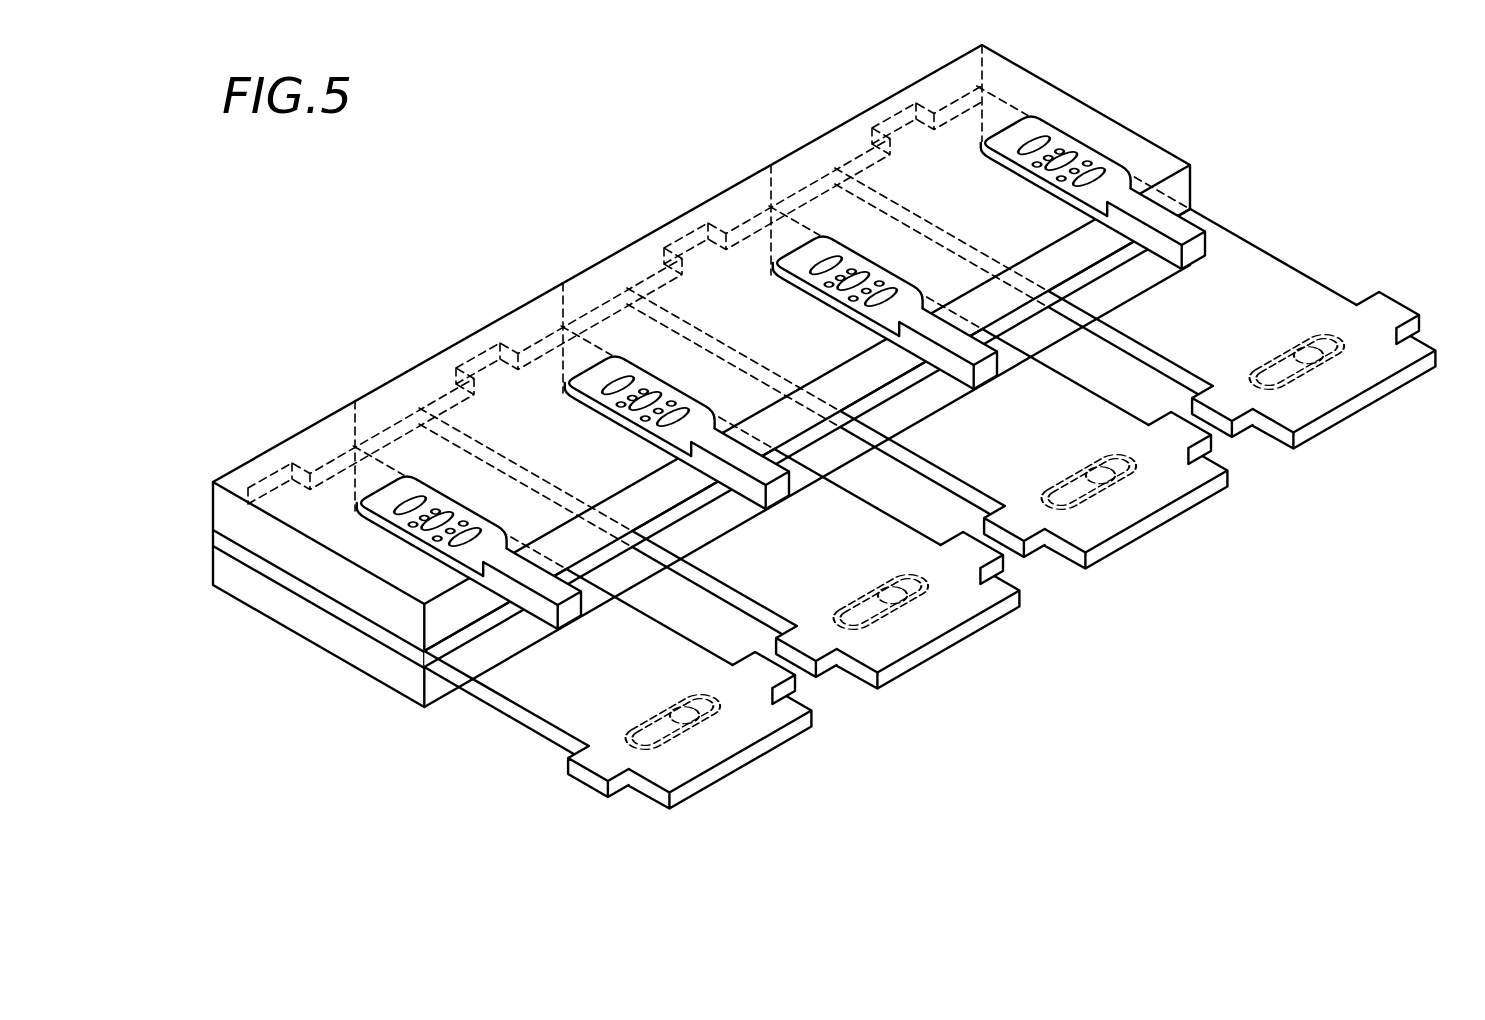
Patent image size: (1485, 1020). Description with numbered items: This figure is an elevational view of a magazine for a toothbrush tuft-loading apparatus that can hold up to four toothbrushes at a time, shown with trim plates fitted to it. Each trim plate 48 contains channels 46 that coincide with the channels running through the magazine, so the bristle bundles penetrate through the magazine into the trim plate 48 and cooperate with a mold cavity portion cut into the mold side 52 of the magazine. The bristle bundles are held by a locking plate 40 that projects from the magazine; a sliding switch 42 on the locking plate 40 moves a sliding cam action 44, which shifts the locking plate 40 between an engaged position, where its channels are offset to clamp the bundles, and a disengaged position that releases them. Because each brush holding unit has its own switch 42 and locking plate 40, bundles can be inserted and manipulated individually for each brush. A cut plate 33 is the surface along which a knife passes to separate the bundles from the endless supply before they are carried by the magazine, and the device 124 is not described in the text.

The cut plate 33 is at (301, 636).
The locking plate 40 is at (281, 470).
The sliding switch 42 is at (581, 773).
The sliding cam action 44 is at (898, 612).
The channels 46 is at (1090, 160).
The trim plate 48 is at (1198, 260).
The mold side 52 is at (1036, 74).
The lead frame unit 124 is at (693, 415).